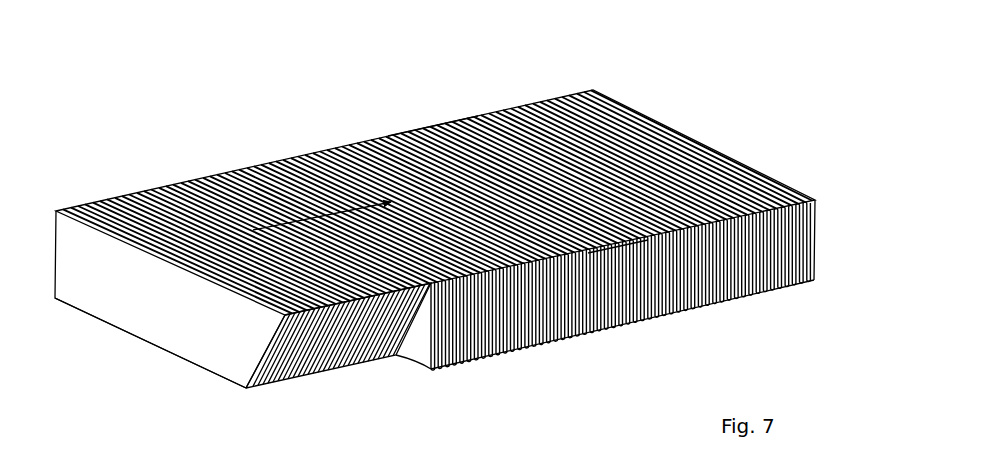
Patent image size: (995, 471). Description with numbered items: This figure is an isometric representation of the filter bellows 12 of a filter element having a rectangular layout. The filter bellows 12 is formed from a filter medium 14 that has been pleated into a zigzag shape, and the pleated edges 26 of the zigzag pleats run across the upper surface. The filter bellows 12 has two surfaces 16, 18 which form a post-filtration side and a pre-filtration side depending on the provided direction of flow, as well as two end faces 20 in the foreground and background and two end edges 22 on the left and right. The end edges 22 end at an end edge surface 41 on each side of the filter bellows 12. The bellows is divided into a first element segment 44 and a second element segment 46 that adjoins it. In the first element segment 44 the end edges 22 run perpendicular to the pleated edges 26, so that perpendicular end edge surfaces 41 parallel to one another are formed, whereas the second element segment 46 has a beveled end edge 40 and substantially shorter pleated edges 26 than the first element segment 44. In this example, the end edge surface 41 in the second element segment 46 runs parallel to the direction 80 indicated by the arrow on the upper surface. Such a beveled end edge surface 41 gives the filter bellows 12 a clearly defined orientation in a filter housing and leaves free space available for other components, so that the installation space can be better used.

The filter bellows 12 is at (435, 173).
The filter medium 14 is at (636, 80).
The surface 16 is at (260, 176).
The surface 18 is at (483, 357).
The end face 20 is at (813, 215).
The end edge 22 is at (112, 166).
The pleated edge 26 is at (400, 133).
The beveled end edge 40 is at (303, 347).
The end edge surface 41 is at (614, 310).
The first element segment 44 is at (722, 292).
The second element segment 46 is at (295, 367).
The direction 80 is at (322, 209).